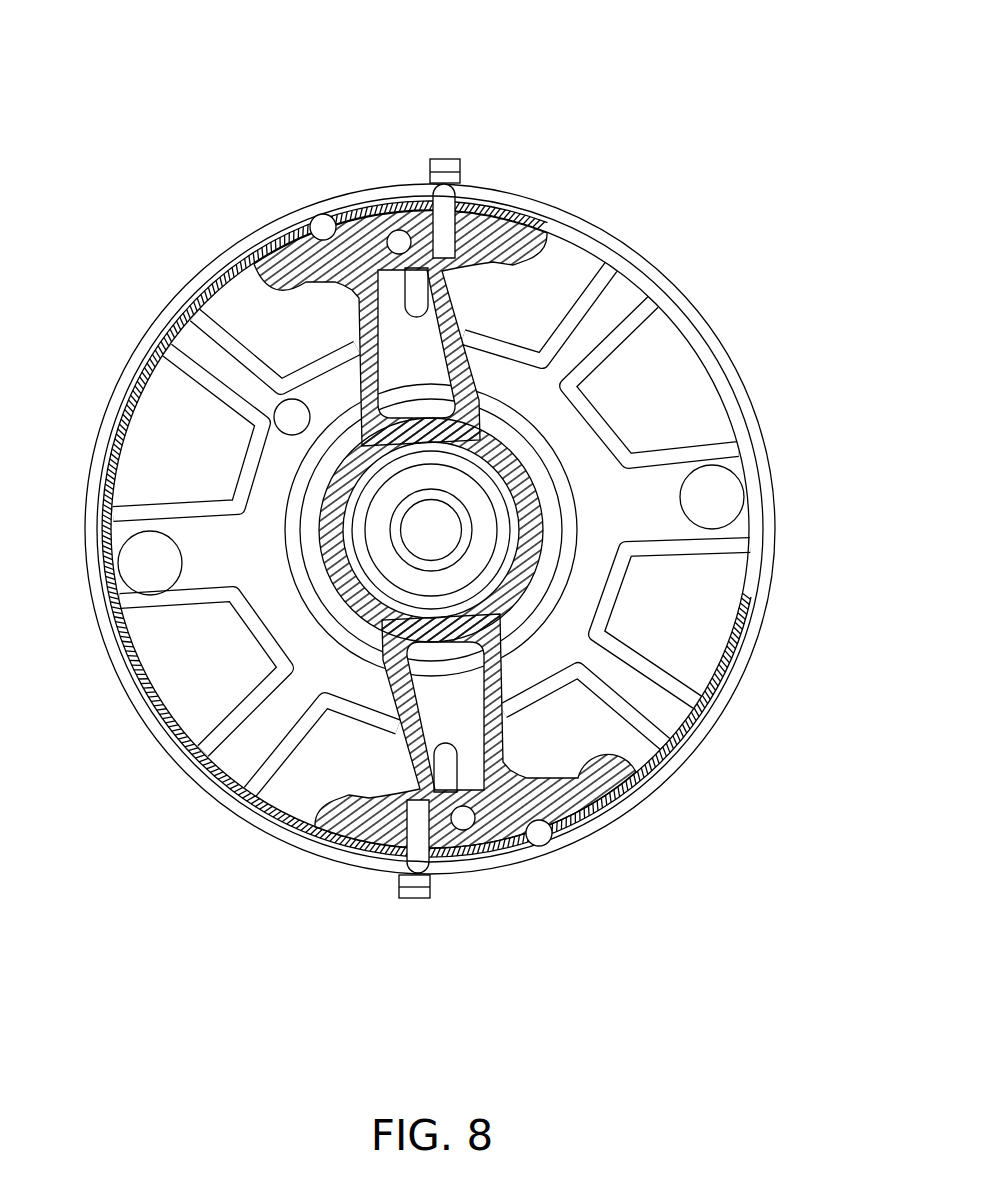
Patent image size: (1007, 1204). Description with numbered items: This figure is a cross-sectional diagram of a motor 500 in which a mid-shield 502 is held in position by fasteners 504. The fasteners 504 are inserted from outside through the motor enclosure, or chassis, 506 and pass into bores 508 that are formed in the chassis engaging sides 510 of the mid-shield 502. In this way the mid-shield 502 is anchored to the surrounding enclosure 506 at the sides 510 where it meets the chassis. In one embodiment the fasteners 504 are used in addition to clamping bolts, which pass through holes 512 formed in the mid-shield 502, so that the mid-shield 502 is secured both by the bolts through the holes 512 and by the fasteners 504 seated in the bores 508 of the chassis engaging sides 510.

The motor 500 is at (701, 110).
The mid-shield 502 is at (287, 677).
The fasteners 504 is at (448, 158).
The motor enclosure 506 is at (763, 422).
The bores 508 is at (492, 217).
The chassis engaging sides 510 is at (312, 222).
The holes 512 is at (399, 232).